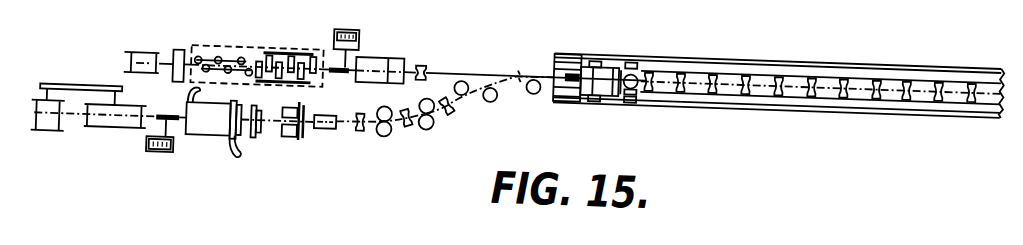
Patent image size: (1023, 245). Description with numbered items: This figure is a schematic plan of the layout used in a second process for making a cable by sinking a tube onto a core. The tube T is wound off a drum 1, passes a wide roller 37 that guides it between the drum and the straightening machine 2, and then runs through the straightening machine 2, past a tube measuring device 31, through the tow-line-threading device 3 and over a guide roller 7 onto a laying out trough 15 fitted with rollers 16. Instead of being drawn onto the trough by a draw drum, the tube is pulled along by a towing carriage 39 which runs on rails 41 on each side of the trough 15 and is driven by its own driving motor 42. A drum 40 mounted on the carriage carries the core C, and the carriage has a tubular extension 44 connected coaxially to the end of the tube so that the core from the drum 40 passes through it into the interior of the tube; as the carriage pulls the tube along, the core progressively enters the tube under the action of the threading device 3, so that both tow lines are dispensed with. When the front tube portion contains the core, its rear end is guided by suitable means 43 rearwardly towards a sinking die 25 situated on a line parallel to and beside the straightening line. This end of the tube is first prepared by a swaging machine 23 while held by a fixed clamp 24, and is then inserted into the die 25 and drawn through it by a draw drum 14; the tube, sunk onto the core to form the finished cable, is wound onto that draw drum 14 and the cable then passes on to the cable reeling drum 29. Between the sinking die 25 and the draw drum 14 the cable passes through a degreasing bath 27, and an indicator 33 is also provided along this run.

The drum 1 is at (137, 65).
The wide roller 37 is at (176, 61).
The straightening machine 2 is at (224, 56).
The tube measuring device 31 is at (330, 42).
The tow-line-threading device 3 is at (386, 62).
The guide roller 7 is at (421, 68).
The cable reeling drum 29 is at (57, 146).
The draw drum 14 is at (124, 141).
The indicator 33 is at (164, 164).
The degreasing bath 27 is at (214, 146).
The sinking die 25 is at (258, 146).
The swaging machine 23 is at (290, 144).
The fixed clamp 24 is at (332, 136).
The guiding means 43 is at (387, 141).
The tubular extension 44 is at (569, 72).
The drum 40 is at (600, 97).
The towing carriage 39 is at (614, 97).
The driving motor 42 is at (636, 81).
The rollers 16 is at (655, 68).
The laying out trough 15 is at (830, 60).
The rails 41 is at (633, 50).